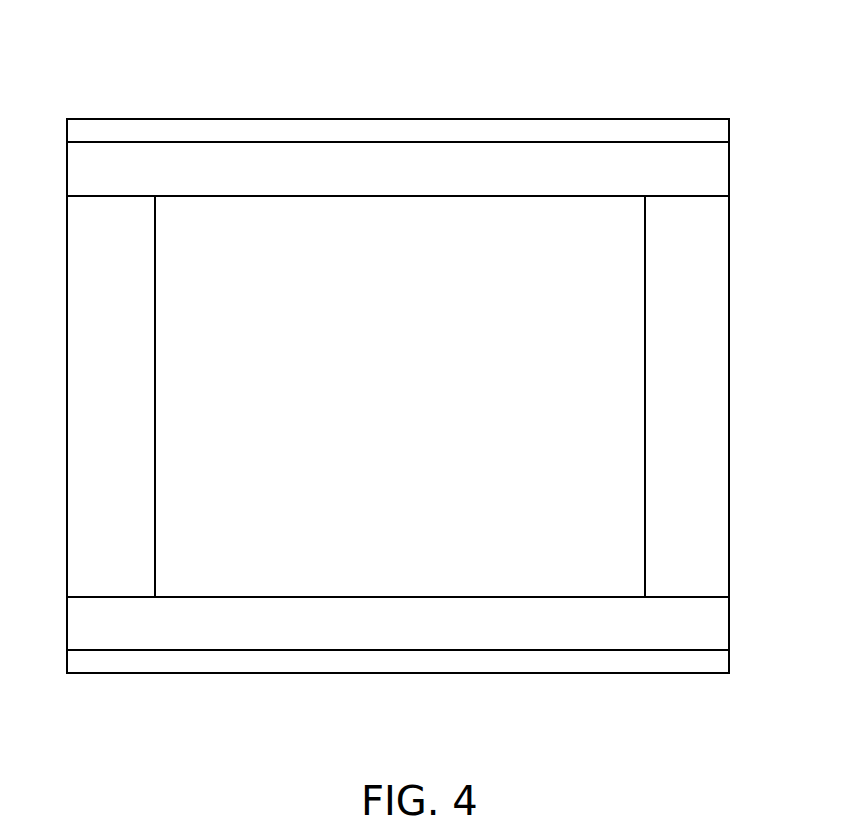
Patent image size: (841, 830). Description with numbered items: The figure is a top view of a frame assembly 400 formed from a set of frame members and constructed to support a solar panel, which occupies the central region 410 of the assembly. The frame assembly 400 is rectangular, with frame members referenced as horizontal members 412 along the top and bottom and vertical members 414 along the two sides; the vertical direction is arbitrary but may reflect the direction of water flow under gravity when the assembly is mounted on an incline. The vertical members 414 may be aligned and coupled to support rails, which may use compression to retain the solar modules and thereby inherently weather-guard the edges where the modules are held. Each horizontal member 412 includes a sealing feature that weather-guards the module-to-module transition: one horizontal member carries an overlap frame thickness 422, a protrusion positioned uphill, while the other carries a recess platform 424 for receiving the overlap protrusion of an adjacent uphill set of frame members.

The frame assembly 400 is at (668, 50).
The display panel 410 is at (432, 375).
The horizontal members 412 is at (402, 160).
The vertical members 414 is at (123, 497).
The overlap frame thickness 422 is at (560, 675).
The recess platform 424 is at (272, 140).